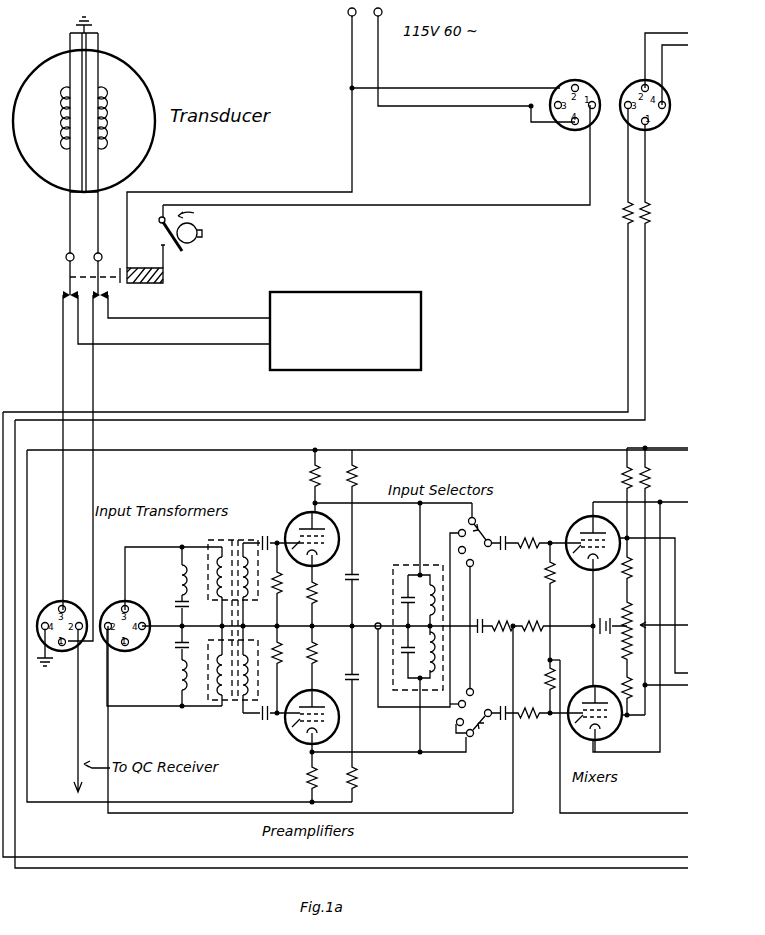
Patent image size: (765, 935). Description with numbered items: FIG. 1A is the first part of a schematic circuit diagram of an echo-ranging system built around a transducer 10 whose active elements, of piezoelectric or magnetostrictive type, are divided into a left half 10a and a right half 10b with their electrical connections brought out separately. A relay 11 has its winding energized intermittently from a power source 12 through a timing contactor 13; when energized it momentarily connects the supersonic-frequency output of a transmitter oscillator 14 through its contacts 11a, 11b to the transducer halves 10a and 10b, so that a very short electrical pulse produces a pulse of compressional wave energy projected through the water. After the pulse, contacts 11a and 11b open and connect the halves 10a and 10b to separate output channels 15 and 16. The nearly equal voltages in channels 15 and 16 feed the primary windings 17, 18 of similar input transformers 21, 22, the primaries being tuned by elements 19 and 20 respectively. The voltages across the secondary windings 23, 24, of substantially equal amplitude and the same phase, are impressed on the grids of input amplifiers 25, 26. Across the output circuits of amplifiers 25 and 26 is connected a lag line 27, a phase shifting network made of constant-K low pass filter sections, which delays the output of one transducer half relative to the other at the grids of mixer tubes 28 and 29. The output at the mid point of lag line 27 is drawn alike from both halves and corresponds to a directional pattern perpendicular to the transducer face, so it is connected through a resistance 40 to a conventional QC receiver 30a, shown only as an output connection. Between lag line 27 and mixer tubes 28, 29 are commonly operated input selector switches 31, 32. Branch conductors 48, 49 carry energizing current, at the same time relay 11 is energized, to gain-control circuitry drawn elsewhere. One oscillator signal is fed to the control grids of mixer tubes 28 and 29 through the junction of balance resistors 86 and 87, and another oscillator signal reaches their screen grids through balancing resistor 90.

The transducer 10 is at (28, 193).
The left half of transducer 10a is at (55, 52).
The right half of transducer 10b is at (112, 57).
The relay 11 is at (148, 284).
The relay contact 11a is at (65, 258).
The relay contact 11b is at (68, 278).
The power source 12 is at (329, 138).
The timing contactor 13 is at (196, 240).
The transmitter oscillator 14 is at (421, 339).
The output channel 15 is at (62, 376).
The output channel 16 is at (93, 376).
The primary winding 17 is at (220, 588).
The primary winding 18 is at (220, 663).
The tuning element 19 is at (177, 582).
The tuning element 20 is at (177, 678).
The input transformer 21 is at (240, 540).
The input transformer 22 is at (240, 727).
The secondary winding 23 is at (244, 590).
The secondary winding 24 is at (245, 664).
The input amplifier 25 is at (304, 513).
The input amplifier 26 is at (289, 737).
The lag line 27 is at (391, 605).
The mixer tube 28 is at (583, 527).
The mixer tube 29 is at (608, 729).
The receiver 30a is at (64, 710).
The input selector switch 31 is at (482, 534).
The input selector switch 32 is at (475, 719).
The resistance 40 is at (506, 621).
The branch conductor 48 is at (624, 324).
The branch conductor 49 is at (648, 324).
The balance resistor 86 is at (546, 578).
The balance resistor 87 is at (546, 688).
The balancing resistor 90 is at (625, 640).